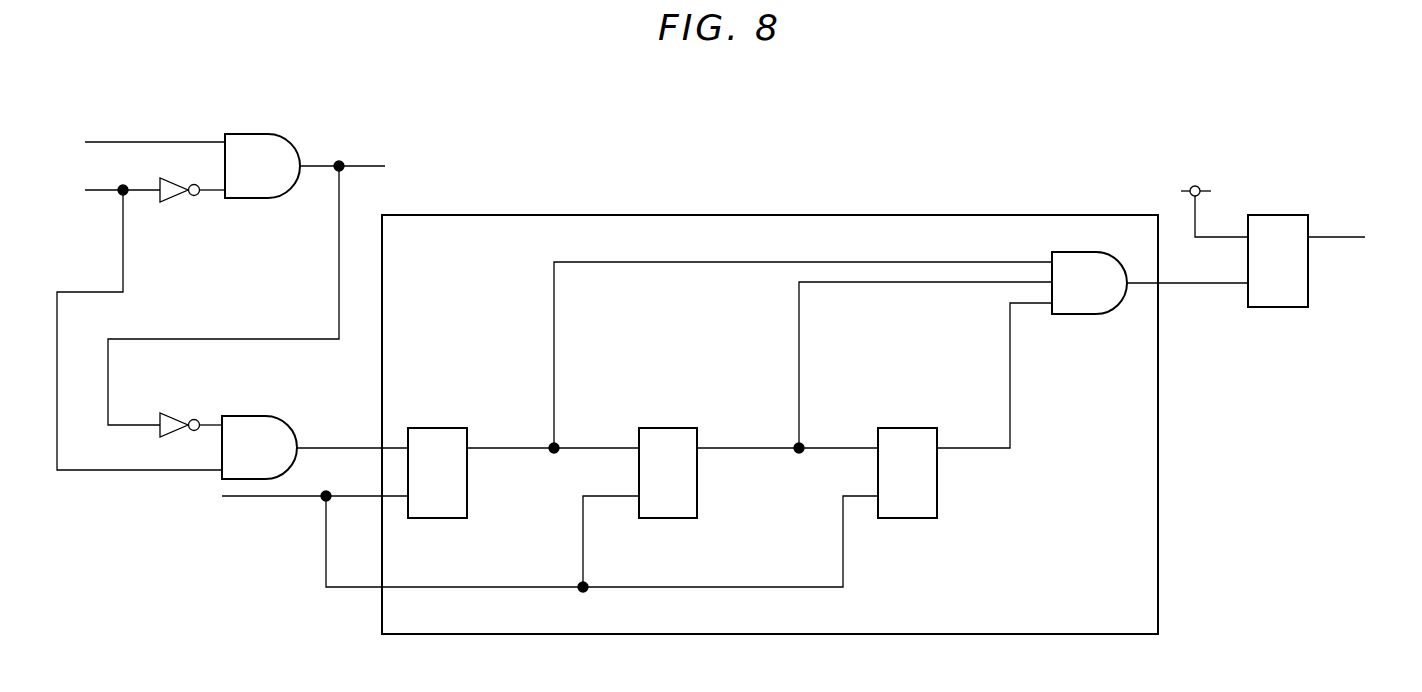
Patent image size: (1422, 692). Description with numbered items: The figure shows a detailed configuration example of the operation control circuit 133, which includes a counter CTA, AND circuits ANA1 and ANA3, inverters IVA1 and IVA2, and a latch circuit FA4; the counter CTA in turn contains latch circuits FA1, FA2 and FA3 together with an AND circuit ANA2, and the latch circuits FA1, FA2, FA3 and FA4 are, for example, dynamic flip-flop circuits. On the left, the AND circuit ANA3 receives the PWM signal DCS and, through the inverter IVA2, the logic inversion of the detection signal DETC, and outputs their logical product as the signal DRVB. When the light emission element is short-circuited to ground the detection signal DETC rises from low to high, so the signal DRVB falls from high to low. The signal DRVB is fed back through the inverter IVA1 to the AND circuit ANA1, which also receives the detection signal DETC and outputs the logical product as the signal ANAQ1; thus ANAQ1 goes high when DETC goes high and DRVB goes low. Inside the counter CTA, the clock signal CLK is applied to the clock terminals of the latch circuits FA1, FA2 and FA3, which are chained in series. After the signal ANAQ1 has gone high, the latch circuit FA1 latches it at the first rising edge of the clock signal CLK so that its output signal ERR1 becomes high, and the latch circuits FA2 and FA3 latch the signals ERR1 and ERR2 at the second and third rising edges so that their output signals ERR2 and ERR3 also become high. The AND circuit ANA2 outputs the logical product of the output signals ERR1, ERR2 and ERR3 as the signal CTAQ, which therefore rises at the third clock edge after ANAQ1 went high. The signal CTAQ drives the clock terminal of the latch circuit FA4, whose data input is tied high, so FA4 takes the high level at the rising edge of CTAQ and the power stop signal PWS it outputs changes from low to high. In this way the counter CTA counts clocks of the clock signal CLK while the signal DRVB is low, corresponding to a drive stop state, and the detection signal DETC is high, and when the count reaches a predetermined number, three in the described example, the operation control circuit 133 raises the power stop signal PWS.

The operation control circuit 133 is at (1289, 113).
The AND circuit ANA1 is at (259, 447).
The AND circuit ANA2 is at (1089, 283).
The AND circuit ANA3 is at (262, 166).
The inverter IVA1 is at (172, 412).
The inverter IVA2 is at (172, 203).
The latch circuit FA1 is at (432, 427).
The latch circuit FA2 is at (663, 427).
The latch circuit FA3 is at (903, 427).
The latch circuit FA4 is at (1274, 214).
The counter CTA is at (1092, 635).
The PWM signal DCS is at (134, 143).
The detection signal DETC is at (128, 326).
The signal DRVB is at (270, 291).
The clock signal CLK is at (531, 539).
The signal ANAQ1 is at (352, 437).
The output signal ERR1 is at (759, 357).
The output signal ERR2 is at (874, 367).
The output signal ERR3 is at (994, 375).
The signal CTAQ is at (1187, 273).
The power stop signal PWS is at (1356, 238).